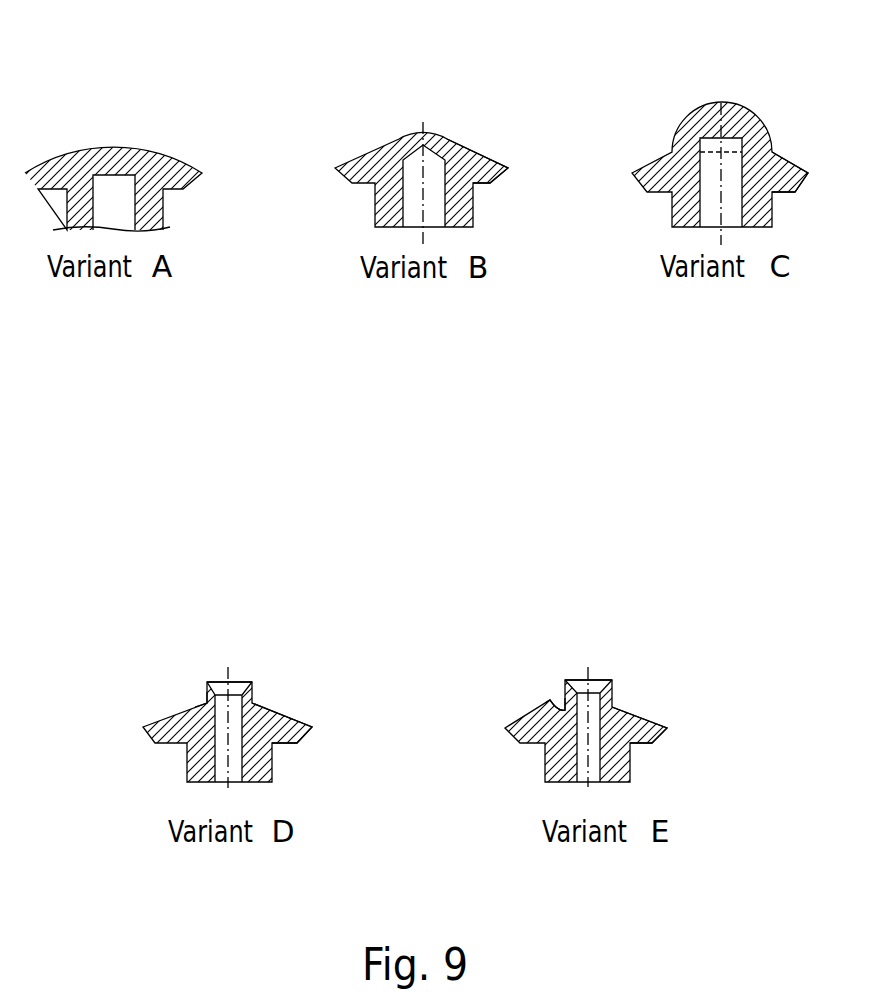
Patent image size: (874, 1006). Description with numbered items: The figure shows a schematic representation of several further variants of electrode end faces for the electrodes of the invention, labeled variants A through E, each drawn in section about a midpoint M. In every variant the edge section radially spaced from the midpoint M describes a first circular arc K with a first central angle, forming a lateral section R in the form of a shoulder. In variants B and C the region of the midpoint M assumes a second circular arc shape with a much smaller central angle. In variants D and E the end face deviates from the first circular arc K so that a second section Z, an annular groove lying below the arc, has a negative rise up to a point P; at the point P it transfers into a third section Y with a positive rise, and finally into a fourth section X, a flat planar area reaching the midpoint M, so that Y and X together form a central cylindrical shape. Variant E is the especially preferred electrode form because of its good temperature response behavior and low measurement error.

The lateral section R is at (360, 158).
The first circular arc K is at (402, 133).
The midpoint M is at (423, 133).
The point P is at (450, 147).
The fourth section X is at (238, 677).
The second section Z is at (200, 703).
The third section Y is at (553, 697).